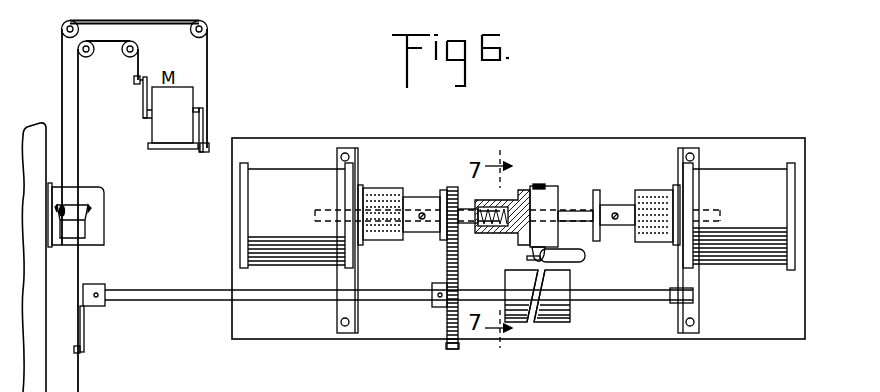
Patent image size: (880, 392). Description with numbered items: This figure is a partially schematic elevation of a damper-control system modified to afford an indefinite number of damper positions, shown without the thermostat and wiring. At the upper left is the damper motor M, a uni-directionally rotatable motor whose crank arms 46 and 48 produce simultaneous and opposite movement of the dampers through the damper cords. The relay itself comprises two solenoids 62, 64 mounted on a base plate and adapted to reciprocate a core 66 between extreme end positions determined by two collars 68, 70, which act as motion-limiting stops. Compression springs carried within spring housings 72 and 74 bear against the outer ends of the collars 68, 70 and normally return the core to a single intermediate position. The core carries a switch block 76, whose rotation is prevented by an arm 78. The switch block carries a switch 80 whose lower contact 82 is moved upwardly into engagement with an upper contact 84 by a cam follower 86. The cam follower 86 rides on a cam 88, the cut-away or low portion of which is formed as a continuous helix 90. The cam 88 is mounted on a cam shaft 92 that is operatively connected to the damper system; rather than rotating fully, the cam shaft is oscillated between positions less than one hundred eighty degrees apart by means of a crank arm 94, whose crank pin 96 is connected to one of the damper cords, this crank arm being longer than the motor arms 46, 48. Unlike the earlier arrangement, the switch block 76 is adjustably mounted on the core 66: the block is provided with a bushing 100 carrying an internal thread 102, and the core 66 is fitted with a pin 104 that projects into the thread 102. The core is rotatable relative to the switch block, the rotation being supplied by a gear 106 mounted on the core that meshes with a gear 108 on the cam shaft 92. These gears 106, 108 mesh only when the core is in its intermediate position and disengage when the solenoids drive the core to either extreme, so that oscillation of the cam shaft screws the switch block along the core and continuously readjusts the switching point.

The crank arm 46 is at (150, 79).
The crank arm 48 is at (205, 126).
The solenoid 62 is at (278, 182).
The solenoid 64 is at (730, 181).
The core 66 is at (573, 211).
The collar 68 is at (418, 197).
The collar 70 is at (609, 205).
The spring housing 72 is at (376, 188).
The spring housing 74 is at (645, 190).
The switch block 76 is at (546, 190).
The arm 78 is at (540, 184).
The switch 80 is at (586, 258).
The lower contact 82 is at (530, 258).
The upper contact 84 is at (535, 253).
The cam follower 86 is at (521, 296).
The cam 88 is at (565, 318).
The continuous helix 90 is at (541, 320).
The cam shaft 92 is at (278, 295).
The crank arm 94 is at (84, 323).
The crank pin 96 is at (78, 354).
The bushing 100 is at (478, 200).
The internal thread 102 is at (497, 233).
The pin 104 is at (505, 205).
The gear 106 is at (453, 186).
The gear 108 is at (452, 350).